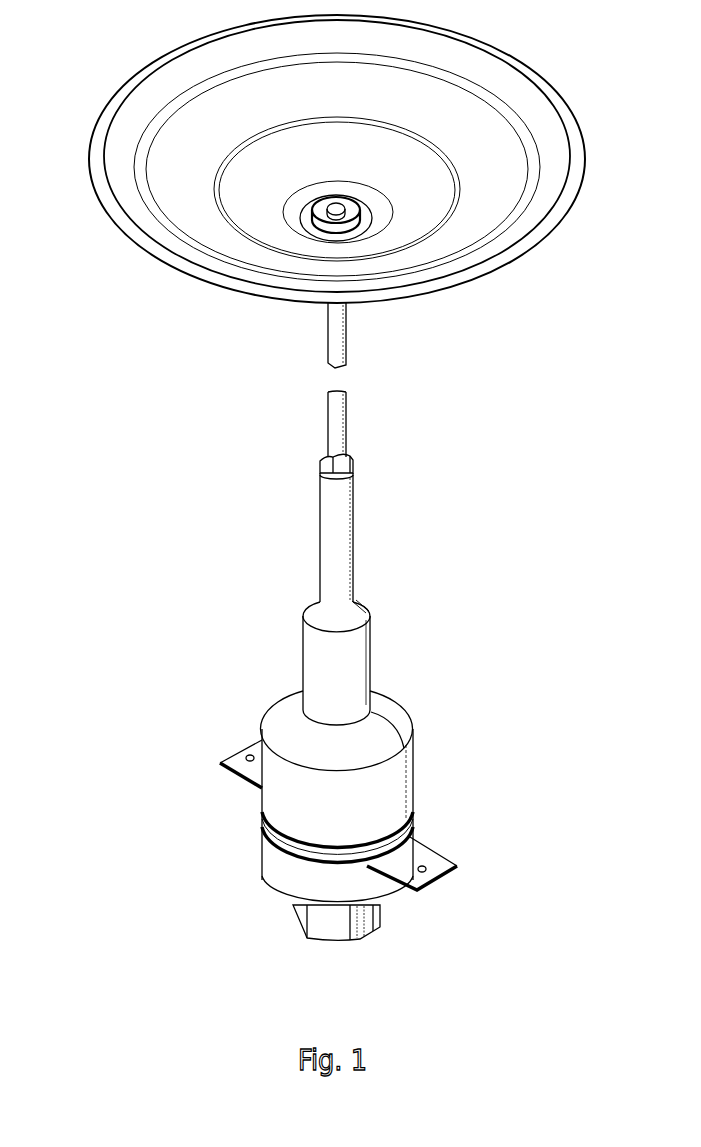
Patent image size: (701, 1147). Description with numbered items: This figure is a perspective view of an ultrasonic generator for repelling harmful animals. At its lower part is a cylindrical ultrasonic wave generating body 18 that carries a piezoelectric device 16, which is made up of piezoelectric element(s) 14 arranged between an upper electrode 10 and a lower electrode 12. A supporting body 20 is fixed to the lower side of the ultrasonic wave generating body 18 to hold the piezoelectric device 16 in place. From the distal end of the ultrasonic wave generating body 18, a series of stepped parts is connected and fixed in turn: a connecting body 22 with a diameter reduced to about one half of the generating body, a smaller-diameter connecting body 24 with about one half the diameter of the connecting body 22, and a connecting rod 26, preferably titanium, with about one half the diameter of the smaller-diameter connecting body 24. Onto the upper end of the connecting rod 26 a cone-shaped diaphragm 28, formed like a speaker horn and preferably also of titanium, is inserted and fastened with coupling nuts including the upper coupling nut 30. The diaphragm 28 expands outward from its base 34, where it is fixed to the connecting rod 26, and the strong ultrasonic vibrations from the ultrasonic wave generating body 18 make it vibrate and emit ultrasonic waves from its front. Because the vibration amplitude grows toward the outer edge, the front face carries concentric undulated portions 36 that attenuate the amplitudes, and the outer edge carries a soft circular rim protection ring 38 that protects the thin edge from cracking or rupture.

The upper electrode 10 is at (233, 757).
The lower electrode 12 is at (432, 858).
The piezoelectric element 14 is at (277, 852).
The piezoelectric device 16 is at (251, 827).
The ultrasonic wave generating body 18 is at (401, 775).
The supporting body 20 is at (287, 878).
The connecting body 22 is at (348, 657).
The smaller-diameter connecting body 24 is at (348, 527).
The connecting rod 26 is at (348, 406).
The diaphragm 28 is at (160, 53).
The upper coupling nut 30 is at (333, 223).
The base 34 is at (305, 219).
The undulated portions 36 is at (223, 218).
The rim protection ring 38 is at (106, 119).